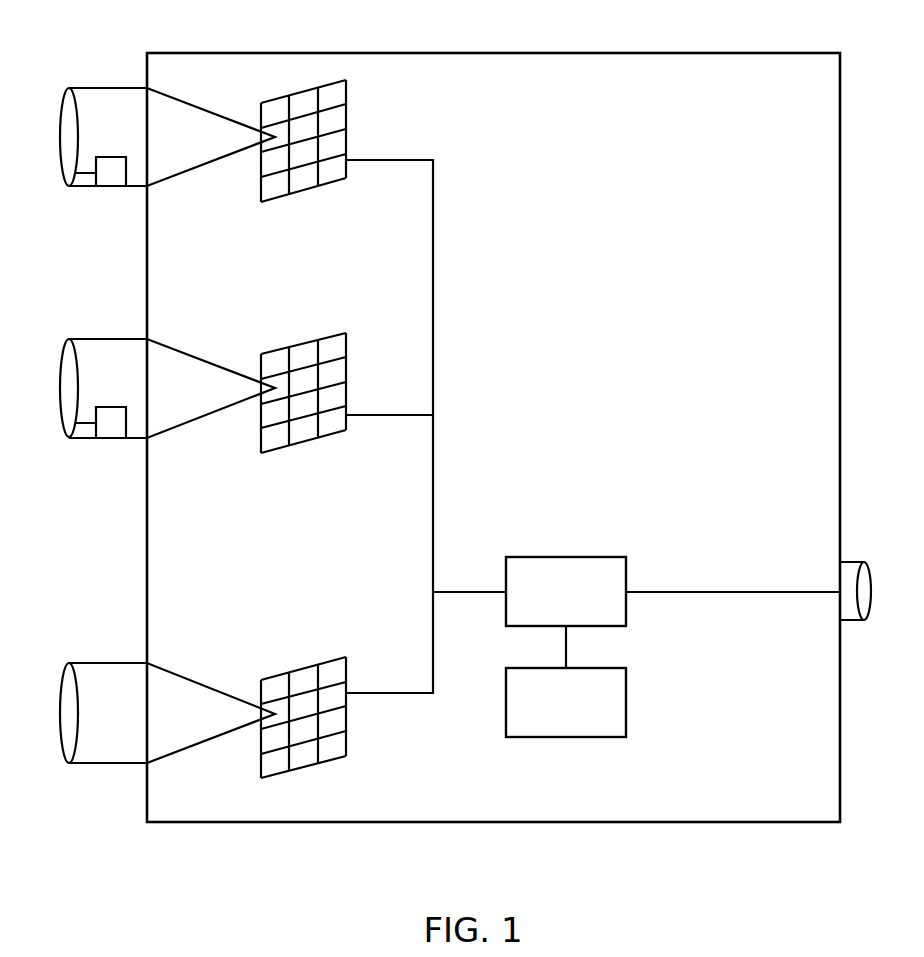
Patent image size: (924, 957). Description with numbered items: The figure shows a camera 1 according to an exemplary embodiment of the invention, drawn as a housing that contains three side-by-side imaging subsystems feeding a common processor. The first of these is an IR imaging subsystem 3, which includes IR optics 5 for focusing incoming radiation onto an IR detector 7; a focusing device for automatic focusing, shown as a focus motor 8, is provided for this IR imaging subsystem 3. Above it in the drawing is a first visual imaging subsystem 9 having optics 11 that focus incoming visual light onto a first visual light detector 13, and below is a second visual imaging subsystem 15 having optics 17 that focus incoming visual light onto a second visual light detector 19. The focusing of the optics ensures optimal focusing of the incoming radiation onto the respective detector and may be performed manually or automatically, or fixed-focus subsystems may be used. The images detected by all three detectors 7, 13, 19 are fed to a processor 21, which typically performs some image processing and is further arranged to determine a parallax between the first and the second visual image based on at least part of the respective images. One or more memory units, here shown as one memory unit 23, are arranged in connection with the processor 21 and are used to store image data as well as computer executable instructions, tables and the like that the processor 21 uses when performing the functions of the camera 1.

The camera 1 is at (749, 127).
The IR imaging subsystem 3 is at (137, 338).
The IR optics 5 is at (66, 404).
The IR detector 7 is at (337, 350).
The focus motor 8 is at (110, 428).
The first visual imaging subsystem 9 is at (137, 87).
The optics 11 is at (70, 153).
The first visual light detector 13 is at (337, 118).
The second visual imaging subsystem 15 is at (90, 661).
The optics 17 is at (95, 752).
The second visual light detector 19 is at (330, 748).
The processor 21 is at (551, 604).
The memory unit 23 is at (551, 715).